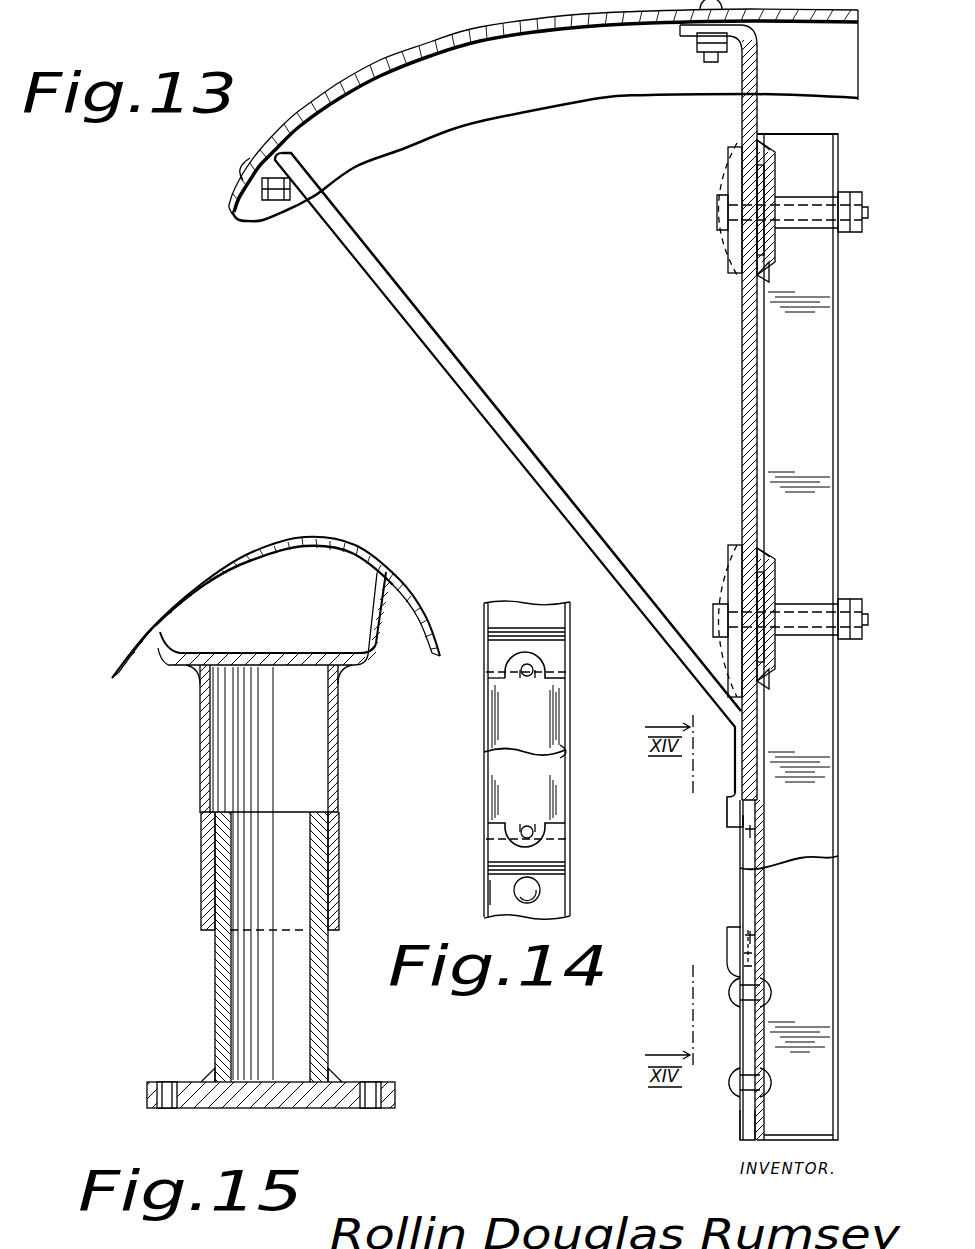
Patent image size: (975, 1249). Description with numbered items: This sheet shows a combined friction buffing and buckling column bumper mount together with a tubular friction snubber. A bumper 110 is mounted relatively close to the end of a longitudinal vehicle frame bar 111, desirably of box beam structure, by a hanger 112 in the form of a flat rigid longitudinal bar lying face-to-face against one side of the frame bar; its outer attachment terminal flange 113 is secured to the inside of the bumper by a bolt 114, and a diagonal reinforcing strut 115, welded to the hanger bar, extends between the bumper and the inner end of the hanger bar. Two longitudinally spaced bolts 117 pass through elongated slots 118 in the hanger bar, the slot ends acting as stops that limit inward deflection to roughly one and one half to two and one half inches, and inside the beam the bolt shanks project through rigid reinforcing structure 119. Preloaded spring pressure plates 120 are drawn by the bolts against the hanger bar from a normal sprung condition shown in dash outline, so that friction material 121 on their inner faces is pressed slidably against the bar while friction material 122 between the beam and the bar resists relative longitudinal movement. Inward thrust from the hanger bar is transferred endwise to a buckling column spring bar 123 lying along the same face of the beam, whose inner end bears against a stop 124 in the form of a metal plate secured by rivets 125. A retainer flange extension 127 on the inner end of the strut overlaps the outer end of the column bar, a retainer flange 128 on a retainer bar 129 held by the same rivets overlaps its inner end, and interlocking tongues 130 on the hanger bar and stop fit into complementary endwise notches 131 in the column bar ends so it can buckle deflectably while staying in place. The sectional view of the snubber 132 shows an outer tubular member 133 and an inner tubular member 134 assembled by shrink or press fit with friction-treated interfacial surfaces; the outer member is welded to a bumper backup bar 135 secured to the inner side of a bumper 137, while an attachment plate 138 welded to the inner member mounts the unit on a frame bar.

In FIG. 13, the bumper 110 is at (374, 66).
In FIG. 13, the longitudinal vehicle frame bar 111 is at (880, 262).
In FIG. 14, the longitudinal vehicle frame bar 111 is at (572, 628).
In FIG. 13, the hanger 112 is at (758, 70).
In FIG. 14, the hanger 112 is at (527, 654).
In FIG. 13, the outer attachment terminal flange 113 is at (680, 30).
In FIG. 13, the bolt 114 is at (704, 46).
In FIG. 13, the diagonal reinforcing strut 115 is at (478, 392).
In FIG. 13, the bolt 117 is at (716, 212).
In FIG. 13, the elongated slot 118 is at (752, 176).
In FIG. 13, the rigid reinforcing structure 119 is at (778, 200).
In FIG. 13, the preloaded spring pressure plate 120 is at (730, 152).
In FIG. 13, the friction material 121 is at (736, 150).
In FIG. 13, the friction material 122 is at (762, 282).
In FIG. 13, the buckling column spring bar 123 is at (746, 856).
In FIG. 14, the buckling column spring bar 123 is at (572, 752).
In FIG. 13, the stop 124 is at (756, 968).
In FIG. 14, the stop 124 is at (520, 843).
In FIG. 13, the rivet 125 is at (774, 993).
In FIG. 14, the rivet 125 is at (536, 890).
In FIG. 13, the retainer flange extension 127 is at (728, 812).
In FIG. 14, the retainer flange extension 127 is at (490, 666).
In FIG. 13, the retainer flange 128 is at (726, 945).
In FIG. 13, the retainer bar 129 is at (740, 1125).
In FIG. 14, the retainer bar 129 is at (500, 893).
In FIG. 13, the interlocking tongue 130 is at (756, 833).
In FIG. 14, the interlocking tongue 130 is at (552, 670).
In FIG. 14, the endwise notch 131 is at (510, 682).
In FIG. 15, the friction buffer or snubber 132 is at (192, 878).
In FIG. 15, the outer tubular member 133 is at (200, 778).
In FIG. 15, the inner tubular member 134 is at (215, 968).
In FIG. 15, the bumper backup bar 135 is at (168, 666).
In FIG. 15, the bumper 137 is at (318, 537).
In FIG. 15, the attachment plate 138 is at (318, 1108).